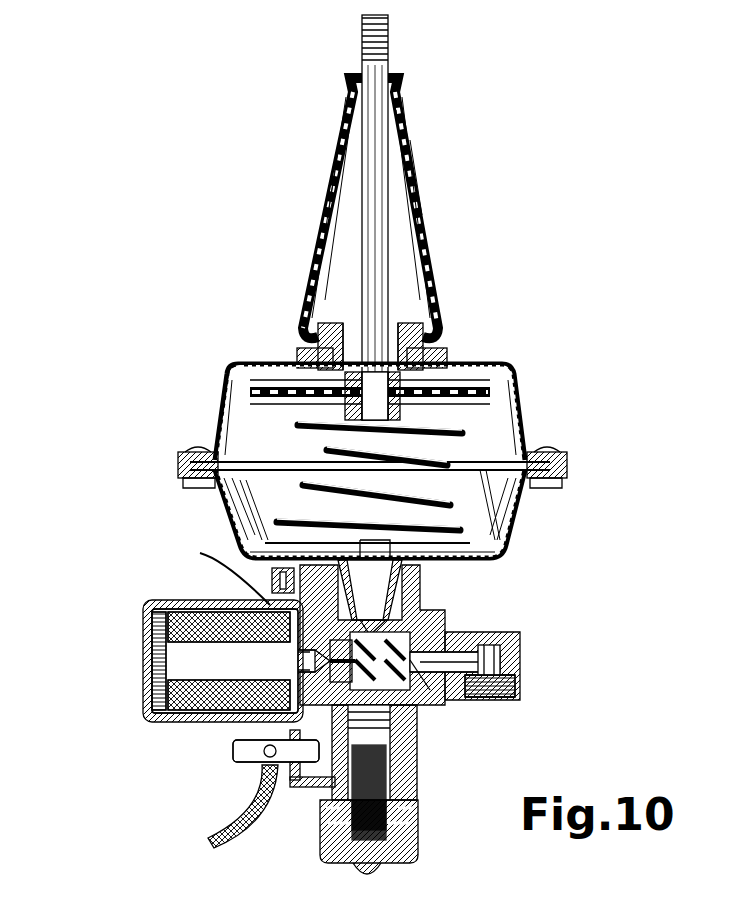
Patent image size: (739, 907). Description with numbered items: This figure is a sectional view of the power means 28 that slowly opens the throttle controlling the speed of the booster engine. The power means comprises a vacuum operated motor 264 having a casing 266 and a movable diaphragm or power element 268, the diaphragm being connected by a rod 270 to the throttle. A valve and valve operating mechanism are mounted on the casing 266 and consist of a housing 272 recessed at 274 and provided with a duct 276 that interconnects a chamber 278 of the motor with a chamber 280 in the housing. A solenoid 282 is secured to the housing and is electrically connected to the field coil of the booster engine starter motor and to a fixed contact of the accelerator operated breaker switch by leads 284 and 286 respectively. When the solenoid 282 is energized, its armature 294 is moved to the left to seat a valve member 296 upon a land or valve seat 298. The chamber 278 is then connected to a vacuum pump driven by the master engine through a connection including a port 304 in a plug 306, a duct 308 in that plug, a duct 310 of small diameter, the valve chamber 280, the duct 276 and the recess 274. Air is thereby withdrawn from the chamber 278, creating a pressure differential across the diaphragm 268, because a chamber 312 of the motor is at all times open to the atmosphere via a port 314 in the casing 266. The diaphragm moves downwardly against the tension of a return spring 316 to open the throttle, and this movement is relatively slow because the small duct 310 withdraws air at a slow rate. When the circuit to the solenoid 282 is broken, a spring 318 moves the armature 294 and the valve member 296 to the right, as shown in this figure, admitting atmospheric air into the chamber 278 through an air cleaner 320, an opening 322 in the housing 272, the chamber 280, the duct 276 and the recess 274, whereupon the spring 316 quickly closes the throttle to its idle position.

The power means 28 is at (440, 318).
The vacuum operated motor 264 is at (515, 400).
The casing 266 is at (510, 525).
The diaphragm 268 is at (236, 378).
The rod 270 is at (370, 160).
The housing 272 is at (415, 775).
The recess 274 is at (410, 585).
The duct 276 is at (375, 620).
The chamber 278 is at (490, 497).
The valve chamber 280 is at (415, 626).
The solenoid 282 is at (150, 705).
The lead 284 is at (200, 553).
The lead 286 is at (222, 818).
The armature 294 is at (200, 720).
The valve member 296 is at (430, 690).
The land or valve seat 298 is at (345, 705).
The port 304 is at (515, 675).
The plug 306 is at (520, 637).
The duct 308 is at (455, 640).
The duct of small diameter 310 is at (480, 700).
The chamber 312 is at (268, 362).
The port 314 is at (480, 368).
The return spring 316 is at (470, 433).
The spring 318 is at (160, 660).
The air cleaner 320 is at (420, 828).
The opening 322 is at (260, 662).